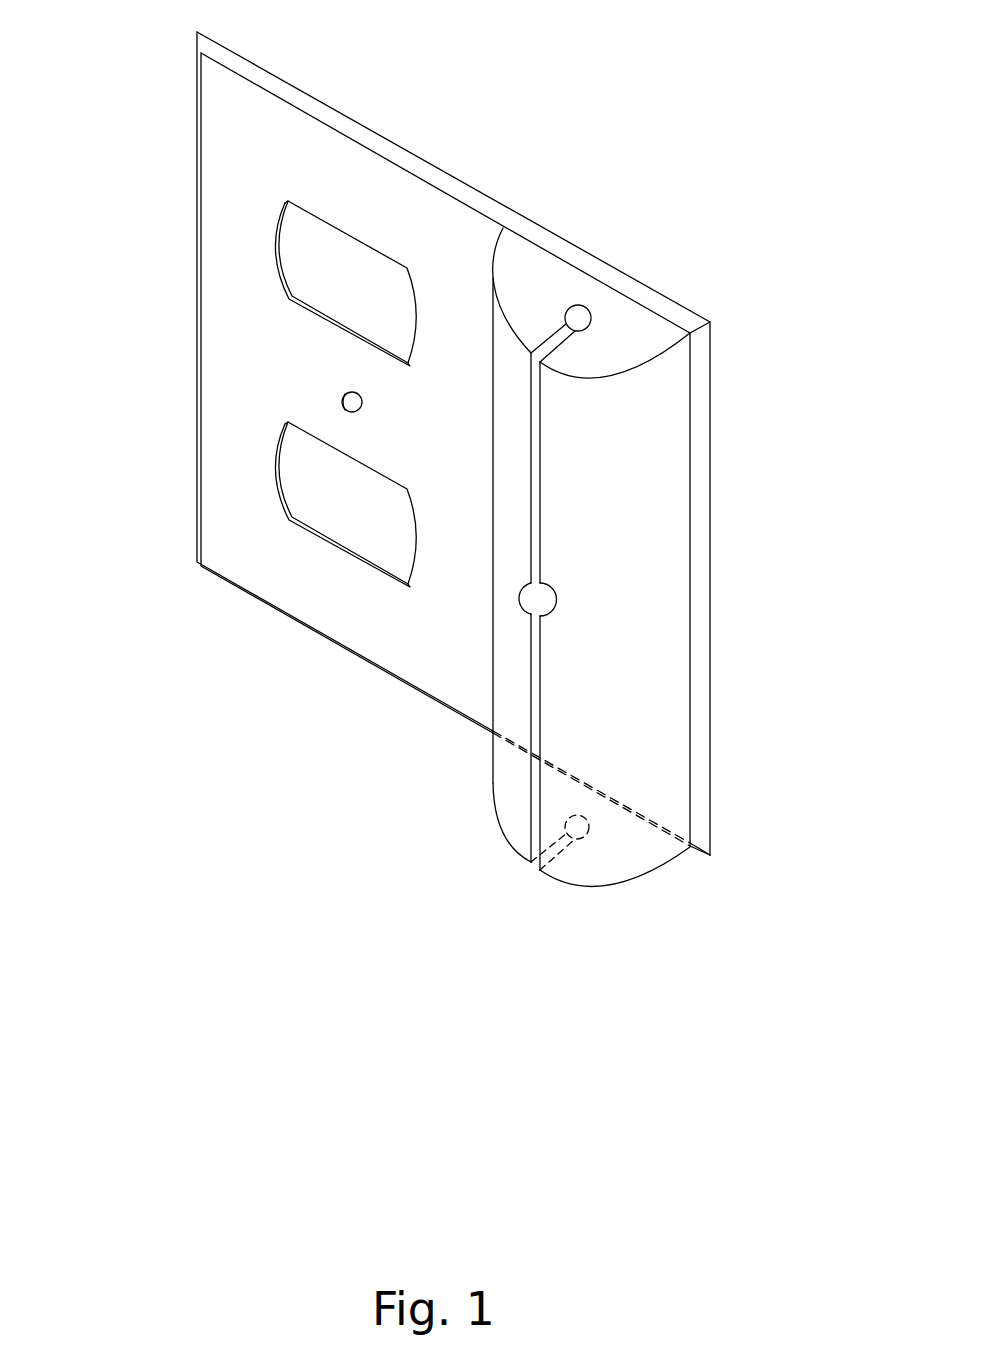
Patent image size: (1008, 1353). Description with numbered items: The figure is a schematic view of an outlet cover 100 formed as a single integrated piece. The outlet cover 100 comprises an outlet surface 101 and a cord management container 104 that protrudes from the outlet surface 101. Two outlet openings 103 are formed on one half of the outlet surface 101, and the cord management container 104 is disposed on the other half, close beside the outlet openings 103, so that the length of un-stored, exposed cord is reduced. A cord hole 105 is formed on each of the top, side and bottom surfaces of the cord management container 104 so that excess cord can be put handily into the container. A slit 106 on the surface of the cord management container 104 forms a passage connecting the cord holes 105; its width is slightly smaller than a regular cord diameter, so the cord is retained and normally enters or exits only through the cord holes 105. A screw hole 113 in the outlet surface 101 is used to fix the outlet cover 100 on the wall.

The outlet cover 100 is at (520, 52).
The outlet surface 101 is at (222, 101).
The outlet openings 103 is at (307, 247).
The cord management container 104 is at (650, 452).
The cord holes 105 is at (579, 305).
The slit 106 is at (537, 497).
The screw hole 113 is at (341, 398).